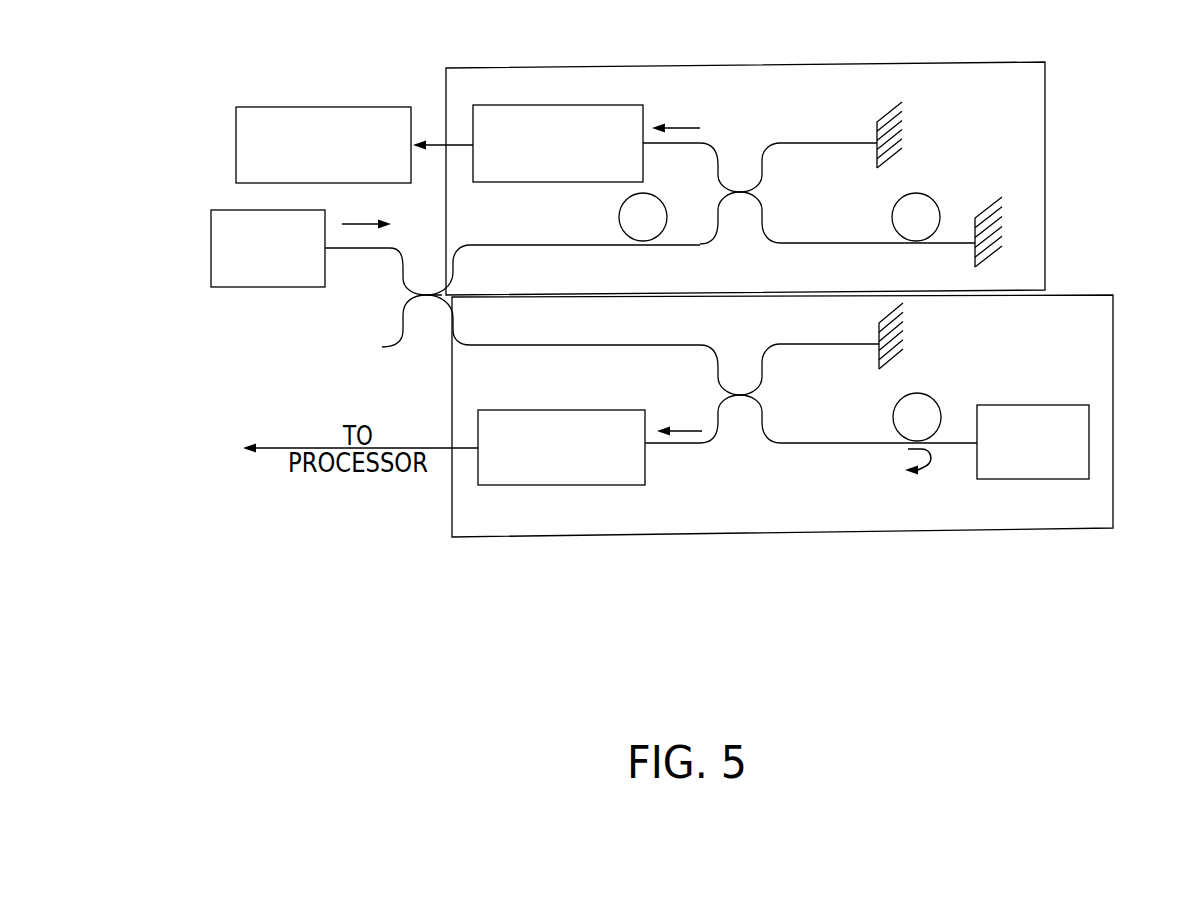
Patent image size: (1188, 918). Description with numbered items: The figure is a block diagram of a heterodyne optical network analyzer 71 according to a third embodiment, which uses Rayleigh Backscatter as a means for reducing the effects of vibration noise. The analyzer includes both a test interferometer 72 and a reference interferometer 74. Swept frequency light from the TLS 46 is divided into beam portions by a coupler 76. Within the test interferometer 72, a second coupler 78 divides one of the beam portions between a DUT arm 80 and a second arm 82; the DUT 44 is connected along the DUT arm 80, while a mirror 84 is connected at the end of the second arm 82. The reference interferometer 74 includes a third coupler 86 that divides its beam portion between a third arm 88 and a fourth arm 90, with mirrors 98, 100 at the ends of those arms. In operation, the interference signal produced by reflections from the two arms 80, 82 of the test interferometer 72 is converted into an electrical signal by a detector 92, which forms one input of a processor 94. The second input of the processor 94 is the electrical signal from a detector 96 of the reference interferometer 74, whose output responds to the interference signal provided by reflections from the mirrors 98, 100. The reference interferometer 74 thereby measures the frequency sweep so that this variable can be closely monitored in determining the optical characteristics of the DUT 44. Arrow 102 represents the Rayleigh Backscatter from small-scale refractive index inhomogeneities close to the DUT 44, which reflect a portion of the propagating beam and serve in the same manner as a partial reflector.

The DUT 44 is at (1077, 472).
The TLS 46 is at (219, 284).
The heterodyne optical network analyzer 71 is at (520, 645).
The test interferometer 72 is at (650, 530).
The reference interferometer 74 is at (590, 78).
The coupler 76 is at (427, 298).
The second coupler 78 is at (750, 397).
The DUT arm 80 is at (835, 445).
The second arm 82 is at (847, 343).
The mirror 84 is at (890, 364).
The third coupler 86 is at (737, 187).
The third arm 88 is at (833, 140).
The fourth arm 90 is at (847, 243).
The detector 92 is at (490, 487).
The processor 94 is at (250, 122).
The detector 96 is at (485, 103).
The mirror 98 is at (902, 102).
The mirror 100 is at (997, 248).
The arrow 102 is at (907, 477).